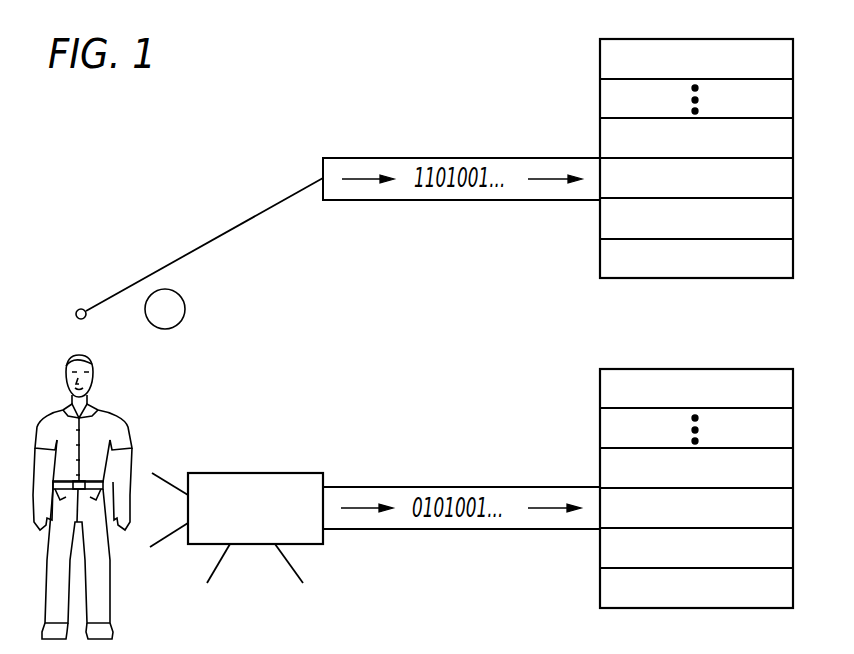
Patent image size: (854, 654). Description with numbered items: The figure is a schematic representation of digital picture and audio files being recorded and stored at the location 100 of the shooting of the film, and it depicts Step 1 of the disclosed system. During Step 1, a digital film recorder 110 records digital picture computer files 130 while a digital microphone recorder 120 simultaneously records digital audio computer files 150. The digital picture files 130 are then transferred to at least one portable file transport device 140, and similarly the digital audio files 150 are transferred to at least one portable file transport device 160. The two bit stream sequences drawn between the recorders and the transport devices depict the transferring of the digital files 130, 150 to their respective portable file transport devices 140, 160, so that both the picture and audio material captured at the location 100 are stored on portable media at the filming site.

The location of the shooting of the film 100 is at (211, 141).
The digital film recorder 110 is at (236, 528).
The digital microphone recorder 120 is at (199, 248).
The digital picture computer files 130 is at (696, 488).
The portable file transport device 140 is at (696, 507).
The digital audio computer files 150 is at (696, 158).
The portable file transport device 160 is at (696, 177).
The Step 1 is at (165, 309).